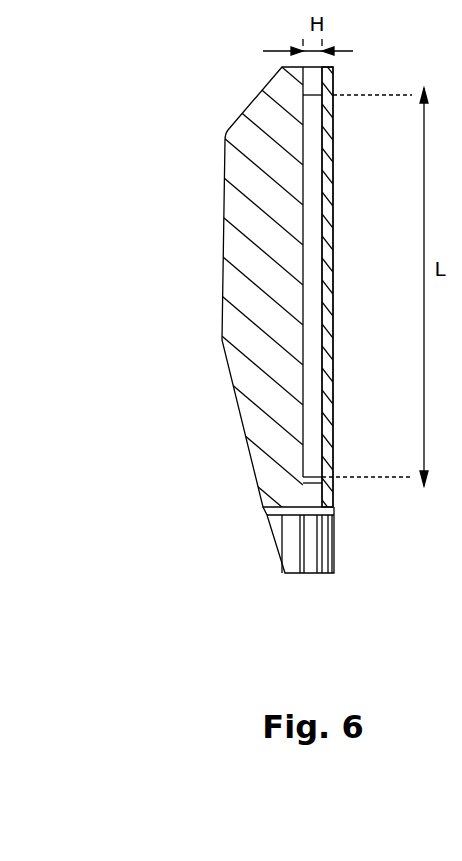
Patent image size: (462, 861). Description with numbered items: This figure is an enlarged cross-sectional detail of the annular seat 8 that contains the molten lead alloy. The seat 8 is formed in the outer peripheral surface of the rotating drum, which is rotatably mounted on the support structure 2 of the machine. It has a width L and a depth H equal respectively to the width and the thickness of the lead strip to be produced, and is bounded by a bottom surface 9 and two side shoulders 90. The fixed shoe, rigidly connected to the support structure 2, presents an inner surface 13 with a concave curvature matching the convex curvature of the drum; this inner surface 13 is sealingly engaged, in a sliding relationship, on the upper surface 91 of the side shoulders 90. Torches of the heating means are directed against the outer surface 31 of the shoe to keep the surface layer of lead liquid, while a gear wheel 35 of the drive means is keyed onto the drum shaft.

The support structure 2 is at (226, 262).
The annular seat 8 is at (333, 362).
The bottom surface 9 is at (303, 305).
The inner surface 13 is at (322, 229).
The outer surface 31 is at (322, 229).
The gear wheel 35 is at (300, 538).
The side shoulders 90 is at (333, 92).
The upper surface 91 is at (333, 84).